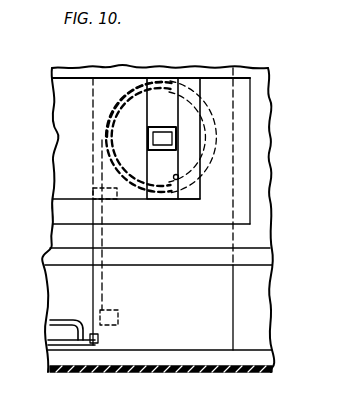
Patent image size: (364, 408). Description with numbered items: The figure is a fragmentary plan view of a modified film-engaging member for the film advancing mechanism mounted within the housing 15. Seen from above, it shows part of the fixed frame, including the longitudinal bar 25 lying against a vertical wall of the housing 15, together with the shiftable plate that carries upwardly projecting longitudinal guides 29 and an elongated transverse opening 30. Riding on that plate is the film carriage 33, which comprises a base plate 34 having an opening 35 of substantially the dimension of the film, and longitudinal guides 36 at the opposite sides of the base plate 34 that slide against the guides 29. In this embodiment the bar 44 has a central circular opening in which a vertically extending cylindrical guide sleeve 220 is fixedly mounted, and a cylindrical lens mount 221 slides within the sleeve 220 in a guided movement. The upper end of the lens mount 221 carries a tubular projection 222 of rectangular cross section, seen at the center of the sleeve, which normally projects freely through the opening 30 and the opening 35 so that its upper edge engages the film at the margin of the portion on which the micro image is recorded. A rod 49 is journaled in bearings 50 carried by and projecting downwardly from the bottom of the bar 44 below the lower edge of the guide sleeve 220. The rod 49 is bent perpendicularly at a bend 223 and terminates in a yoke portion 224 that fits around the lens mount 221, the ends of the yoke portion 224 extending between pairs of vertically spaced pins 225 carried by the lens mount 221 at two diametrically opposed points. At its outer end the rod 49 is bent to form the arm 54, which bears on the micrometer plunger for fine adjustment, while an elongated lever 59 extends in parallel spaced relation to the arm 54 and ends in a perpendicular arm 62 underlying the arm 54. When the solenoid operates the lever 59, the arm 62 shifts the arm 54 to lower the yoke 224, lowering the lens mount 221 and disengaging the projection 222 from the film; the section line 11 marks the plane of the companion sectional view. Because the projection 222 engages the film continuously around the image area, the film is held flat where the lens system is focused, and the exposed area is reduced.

The section line 11 is at (85, 137).
The housing 15 is at (178, 372).
The longitudinal bar 25 is at (274, 354).
The longitudinal guides 29 is at (208, 262).
The elongated transverse opening 30 is at (179, 177).
The film carriage 33 is at (262, 176).
The base plate 34 is at (58, 68).
The opening 35 is at (53, 83).
The guides 36 is at (175, 240).
The bar 44 is at (229, 306).
The rod 49 is at (103, 287).
The bearings 50 is at (105, 200).
The arm 54 is at (50, 343).
The elongated lever 59 is at (63, 320).
The perpendicular arm 62 is at (100, 337).
The cylindrical guide sleeve 220 is at (206, 102).
The cylindrical lens mount 221 is at (185, 78).
The tubular projection 222 is at (162, 127).
The perpendicular bend 223 is at (96, 134).
The yoke portion 224 is at (124, 98).
The pins 225 is at (162, 80).